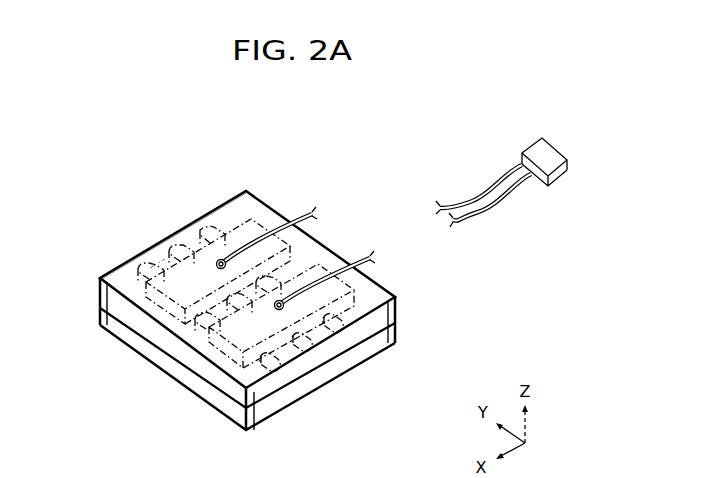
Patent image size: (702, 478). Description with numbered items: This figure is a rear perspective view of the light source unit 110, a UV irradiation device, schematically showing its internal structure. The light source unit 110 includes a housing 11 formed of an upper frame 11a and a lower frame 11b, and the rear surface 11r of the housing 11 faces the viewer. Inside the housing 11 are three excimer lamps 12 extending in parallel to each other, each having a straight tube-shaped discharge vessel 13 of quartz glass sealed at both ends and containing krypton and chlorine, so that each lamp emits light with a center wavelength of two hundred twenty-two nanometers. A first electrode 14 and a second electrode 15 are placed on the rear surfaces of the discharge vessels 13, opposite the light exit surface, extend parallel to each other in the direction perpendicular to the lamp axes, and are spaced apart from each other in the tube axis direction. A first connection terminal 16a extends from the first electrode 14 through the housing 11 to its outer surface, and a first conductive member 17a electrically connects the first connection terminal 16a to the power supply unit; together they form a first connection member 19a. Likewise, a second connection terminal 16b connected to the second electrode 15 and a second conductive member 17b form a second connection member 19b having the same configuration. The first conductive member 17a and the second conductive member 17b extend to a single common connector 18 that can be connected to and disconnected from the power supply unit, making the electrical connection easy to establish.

The light source unit 110 is at (108, 178).
The housing 11 is at (266, 320).
The upper frame 11a is at (398, 333).
The lower frame 11b is at (398, 310).
The rear surface 11r is at (115, 273).
The excimer lamp 12 is at (190, 240).
The discharge vessel 13 is at (168, 265).
The first electrode 14 is at (163, 312).
The second electrode 15 is at (222, 350).
The first connection terminal 16a is at (225, 259).
The second connection terminal 16b is at (283, 300).
The first conductive member 17a is at (305, 210).
The second conductive member 17b is at (368, 256).
The connector 18 is at (549, 152).
The first connection member 19a is at (370, 183).
The second connection member 19b is at (408, 232).